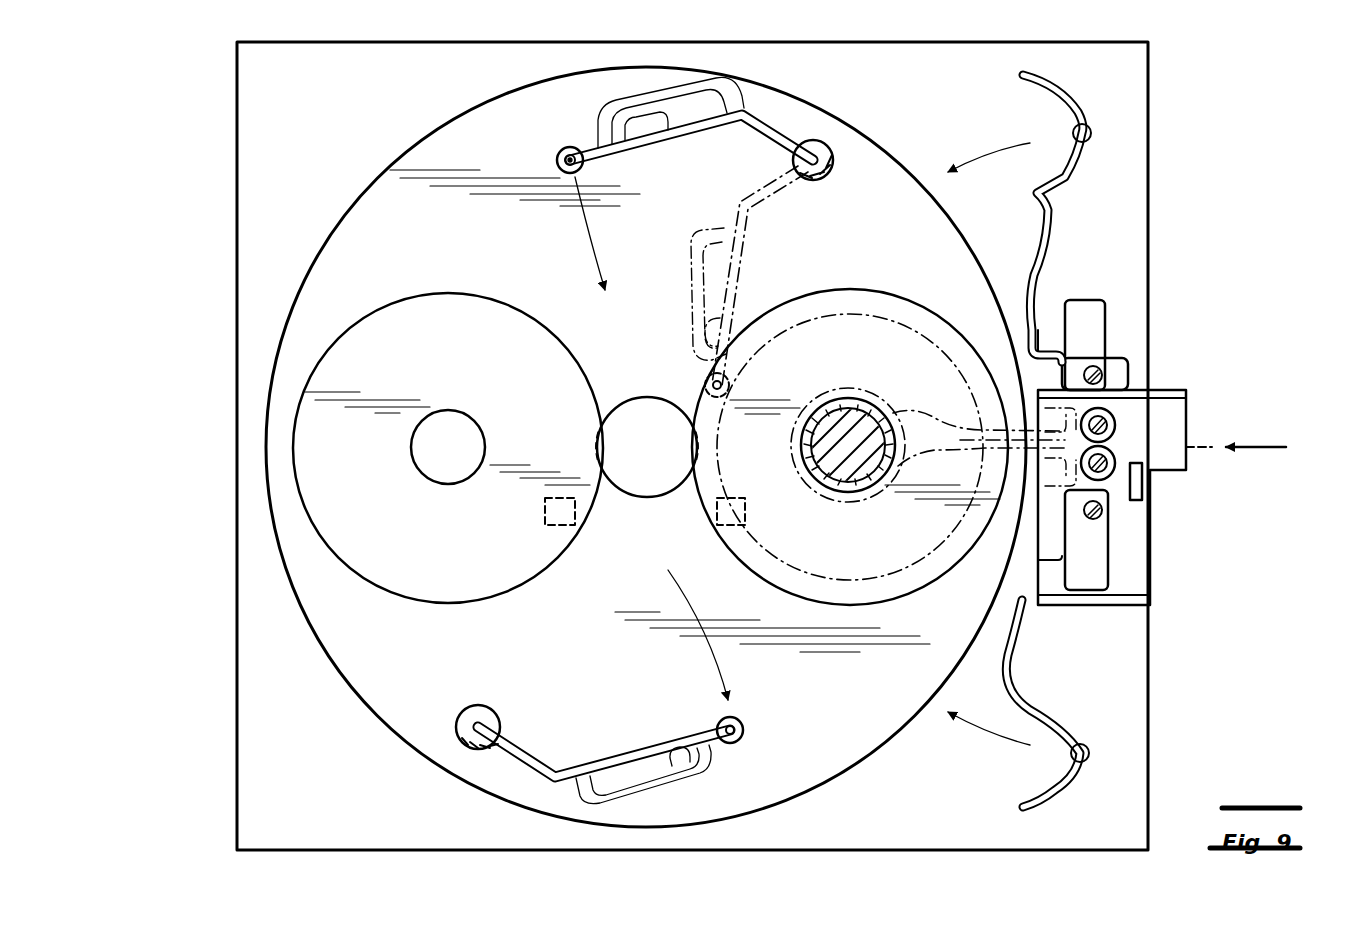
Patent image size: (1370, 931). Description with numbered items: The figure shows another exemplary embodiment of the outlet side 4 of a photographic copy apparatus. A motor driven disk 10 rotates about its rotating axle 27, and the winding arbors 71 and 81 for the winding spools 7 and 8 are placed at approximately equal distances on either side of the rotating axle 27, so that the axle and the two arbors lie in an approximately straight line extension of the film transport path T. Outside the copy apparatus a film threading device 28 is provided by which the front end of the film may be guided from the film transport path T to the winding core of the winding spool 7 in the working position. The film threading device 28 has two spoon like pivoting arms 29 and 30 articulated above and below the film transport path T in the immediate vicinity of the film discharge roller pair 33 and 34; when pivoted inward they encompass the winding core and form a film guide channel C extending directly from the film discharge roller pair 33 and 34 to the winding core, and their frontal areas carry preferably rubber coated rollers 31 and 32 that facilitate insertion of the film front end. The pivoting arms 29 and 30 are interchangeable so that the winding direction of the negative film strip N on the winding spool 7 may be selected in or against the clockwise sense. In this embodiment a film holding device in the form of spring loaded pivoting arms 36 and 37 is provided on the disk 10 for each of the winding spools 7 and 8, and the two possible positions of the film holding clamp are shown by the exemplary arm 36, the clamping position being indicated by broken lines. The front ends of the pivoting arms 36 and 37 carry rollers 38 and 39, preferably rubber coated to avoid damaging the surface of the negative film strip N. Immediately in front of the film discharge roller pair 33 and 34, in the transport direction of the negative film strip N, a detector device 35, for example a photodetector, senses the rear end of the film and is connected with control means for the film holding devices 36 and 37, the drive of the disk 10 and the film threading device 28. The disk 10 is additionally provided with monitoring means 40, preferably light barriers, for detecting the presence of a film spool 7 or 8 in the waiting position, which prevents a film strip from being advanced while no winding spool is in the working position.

The outlet side 4 is at (220, 120).
The winding spool 7 is at (832, 300).
The winding spool 8 is at (452, 300).
The disk 10 is at (838, 145).
The rotating axle 27 is at (642, 410).
The film threading device 28 is at (1128, 300).
The pivoting arm 29 is at (1065, 180).
The pivoting arm 30 is at (1060, 700).
The roller 31 is at (1090, 133).
The roller 32 is at (1088, 753).
The film discharge roller 33 is at (1110, 418).
The film discharge roller 34 is at (1104, 478).
The detector device 35 is at (1138, 483).
The pivoting arm 36 is at (758, 115).
The pivoting arm 37 is at (612, 757).
The roller 38 is at (556, 158).
The roller 39 is at (745, 728).
The monitoring means 40 is at (558, 525).
The winding arbor 71 is at (856, 410).
The winding arbor 81 is at (455, 430).
The negative film strip N is at (870, 315).
The film guide channel C is at (936, 425).
The film transport path T is at (1250, 437).